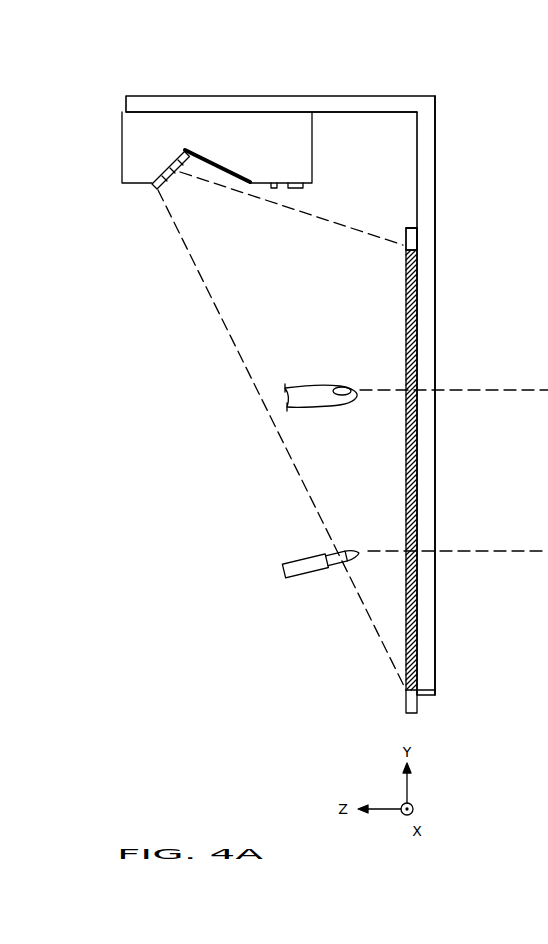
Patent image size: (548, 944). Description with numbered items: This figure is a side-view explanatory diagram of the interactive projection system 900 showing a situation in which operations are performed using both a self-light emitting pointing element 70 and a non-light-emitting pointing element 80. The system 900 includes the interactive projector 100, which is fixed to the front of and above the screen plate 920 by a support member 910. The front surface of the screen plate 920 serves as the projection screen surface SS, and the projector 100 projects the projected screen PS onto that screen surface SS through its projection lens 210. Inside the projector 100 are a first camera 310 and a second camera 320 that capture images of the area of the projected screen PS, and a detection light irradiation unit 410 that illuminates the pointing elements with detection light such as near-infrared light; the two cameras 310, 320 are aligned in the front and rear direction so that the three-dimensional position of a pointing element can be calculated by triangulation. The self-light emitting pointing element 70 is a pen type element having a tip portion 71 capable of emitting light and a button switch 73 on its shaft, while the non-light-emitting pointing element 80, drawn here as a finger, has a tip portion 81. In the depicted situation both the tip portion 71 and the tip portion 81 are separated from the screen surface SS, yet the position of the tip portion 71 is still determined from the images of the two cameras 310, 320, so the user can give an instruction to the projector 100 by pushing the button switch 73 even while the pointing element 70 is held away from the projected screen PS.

The interactive projector 100 is at (255, 123).
The first camera 310 is at (155, 167).
The second camera 320 is at (312, 185).
The detection light irradiation unit 410 is at (274, 190).
The projection lens 210 is at (153, 186).
The interactive projection system 900 is at (470, 128).
The support member 910 is at (428, 222).
The screen plate 920 is at (412, 242).
The projection screen surface SS is at (403, 243).
The projected screen PS is at (406, 338).
The non-light-emitting pointing element 80 is at (312, 386).
The tip portion of the non-light-emitting pointing element 81 is at (355, 388).
The self-light emitting pointing element 70 is at (277, 570).
The tip portion 71 is at (362, 551).
The button switch 73 is at (322, 566).